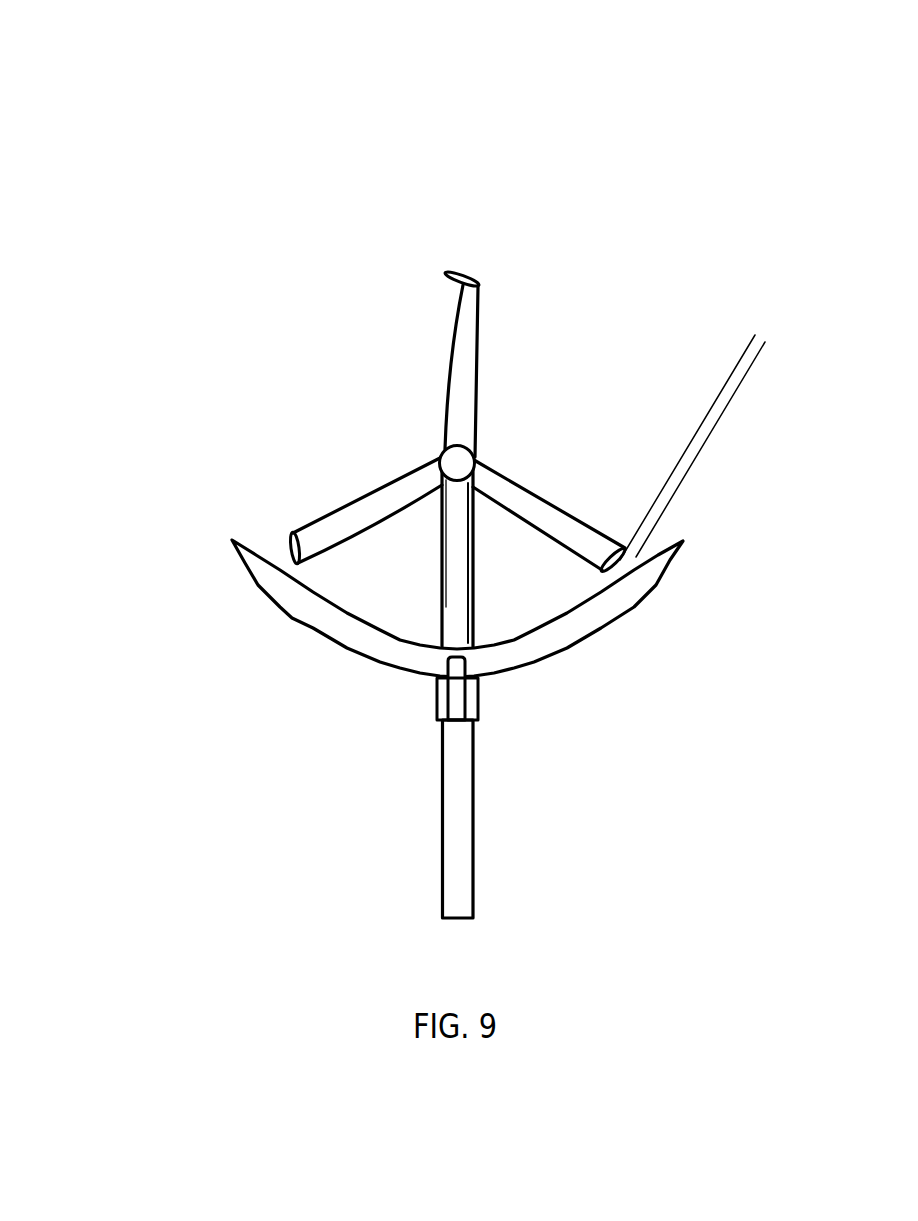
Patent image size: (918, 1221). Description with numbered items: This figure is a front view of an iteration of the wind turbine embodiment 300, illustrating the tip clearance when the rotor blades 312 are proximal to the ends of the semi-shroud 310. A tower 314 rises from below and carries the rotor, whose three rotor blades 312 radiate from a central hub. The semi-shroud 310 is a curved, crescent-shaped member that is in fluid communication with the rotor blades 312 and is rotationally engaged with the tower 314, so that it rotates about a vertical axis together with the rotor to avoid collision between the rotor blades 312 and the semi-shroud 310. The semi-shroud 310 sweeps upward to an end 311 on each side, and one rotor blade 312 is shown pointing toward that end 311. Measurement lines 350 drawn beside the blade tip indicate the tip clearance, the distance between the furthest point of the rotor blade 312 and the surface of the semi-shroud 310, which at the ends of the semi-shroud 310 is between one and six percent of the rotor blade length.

The wind turbine assembly 300 is at (92, 49).
The semi-shroud 310 is at (523, 655).
The base arm tip 311 is at (655, 568).
The rotor blade 312 is at (508, 497).
The tower 314 is at (458, 819).
The measurement lines 350 is at (763, 355).